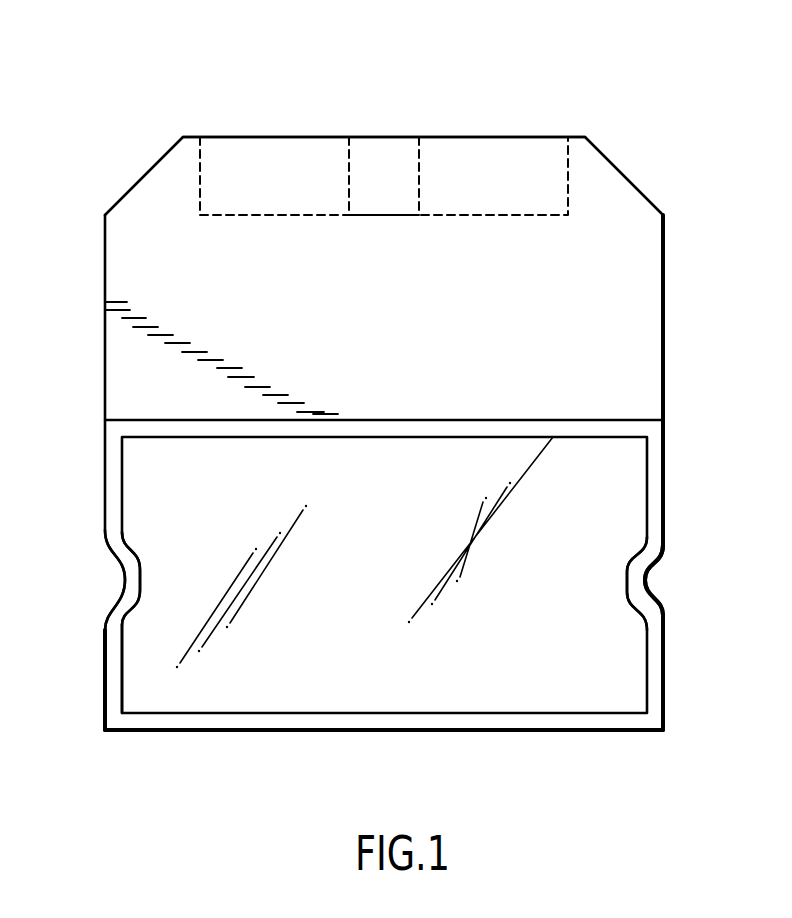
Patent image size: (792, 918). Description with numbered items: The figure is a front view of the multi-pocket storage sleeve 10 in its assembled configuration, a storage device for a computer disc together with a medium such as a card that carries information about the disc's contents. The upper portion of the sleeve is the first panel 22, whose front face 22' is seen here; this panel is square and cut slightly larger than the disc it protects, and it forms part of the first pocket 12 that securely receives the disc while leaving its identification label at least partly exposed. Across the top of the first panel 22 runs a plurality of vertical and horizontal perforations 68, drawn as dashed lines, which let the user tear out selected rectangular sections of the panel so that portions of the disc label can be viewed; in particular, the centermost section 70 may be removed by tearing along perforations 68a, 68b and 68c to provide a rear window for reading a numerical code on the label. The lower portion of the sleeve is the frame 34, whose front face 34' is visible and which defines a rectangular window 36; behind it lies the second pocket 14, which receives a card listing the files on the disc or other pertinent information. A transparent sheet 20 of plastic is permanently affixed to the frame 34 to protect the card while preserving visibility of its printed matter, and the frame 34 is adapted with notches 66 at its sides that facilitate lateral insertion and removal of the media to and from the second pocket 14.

The multi-pocket storage sleeve 10 is at (377, 108).
The first pocket 12 is at (563, 420).
The second pocket 14 is at (664, 477).
The transparent sheet 20 is at (215, 507).
The first panel 22 is at (487, 254).
The front face of first panel 22' is at (259, 358).
The frame 34 is at (95, 706).
The front face of frame 34' is at (196, 669).
The window 36 is at (380, 558).
The notches 66 is at (113, 578).
The perforations 68 is at (200, 180).
The perforation 68a is at (350, 168).
The perforation 68b is at (373, 214).
The perforation 68c is at (420, 175).
The centermost section 70 is at (398, 190).